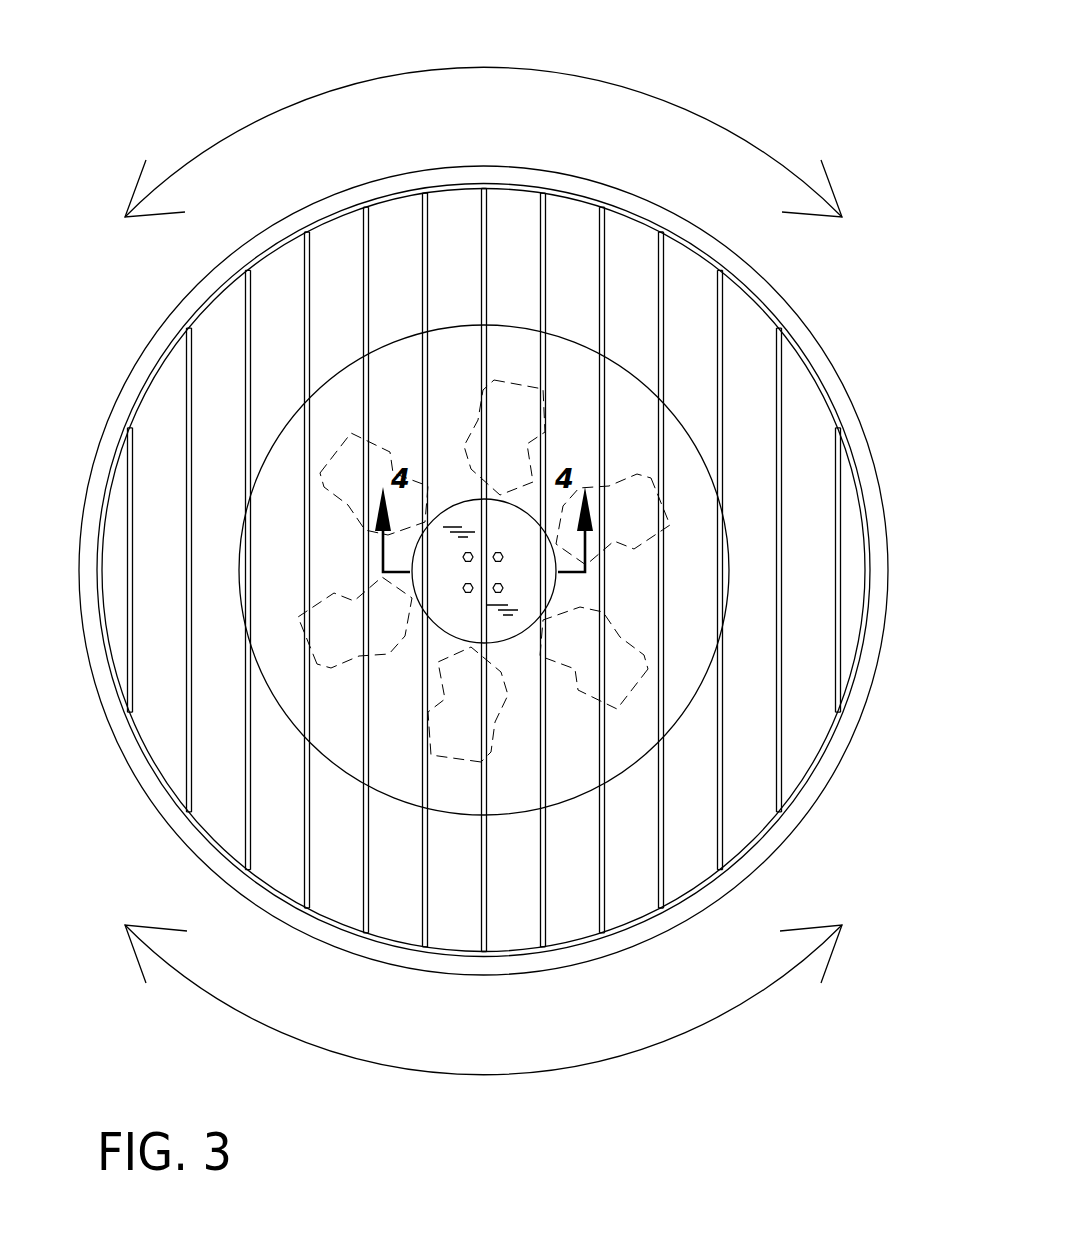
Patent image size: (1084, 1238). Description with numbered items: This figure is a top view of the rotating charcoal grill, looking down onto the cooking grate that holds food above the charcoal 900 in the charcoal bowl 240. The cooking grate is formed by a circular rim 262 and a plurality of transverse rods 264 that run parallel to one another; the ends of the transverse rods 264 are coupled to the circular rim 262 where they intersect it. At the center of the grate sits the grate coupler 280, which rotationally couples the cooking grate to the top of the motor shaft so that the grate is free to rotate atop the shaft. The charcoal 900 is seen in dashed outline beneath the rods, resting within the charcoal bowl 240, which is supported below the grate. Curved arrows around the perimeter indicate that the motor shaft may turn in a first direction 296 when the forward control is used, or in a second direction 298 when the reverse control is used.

The charcoal bowl 240 is at (147, 797).
The circular rim 262 is at (863, 641).
The plurality of transverse rods 264 is at (660, 862).
The grate coupler 280 is at (422, 608).
The charcoal 900 is at (672, 557).
The first direction 296 is at (438, 1072).
The second direction 298 is at (352, 88).